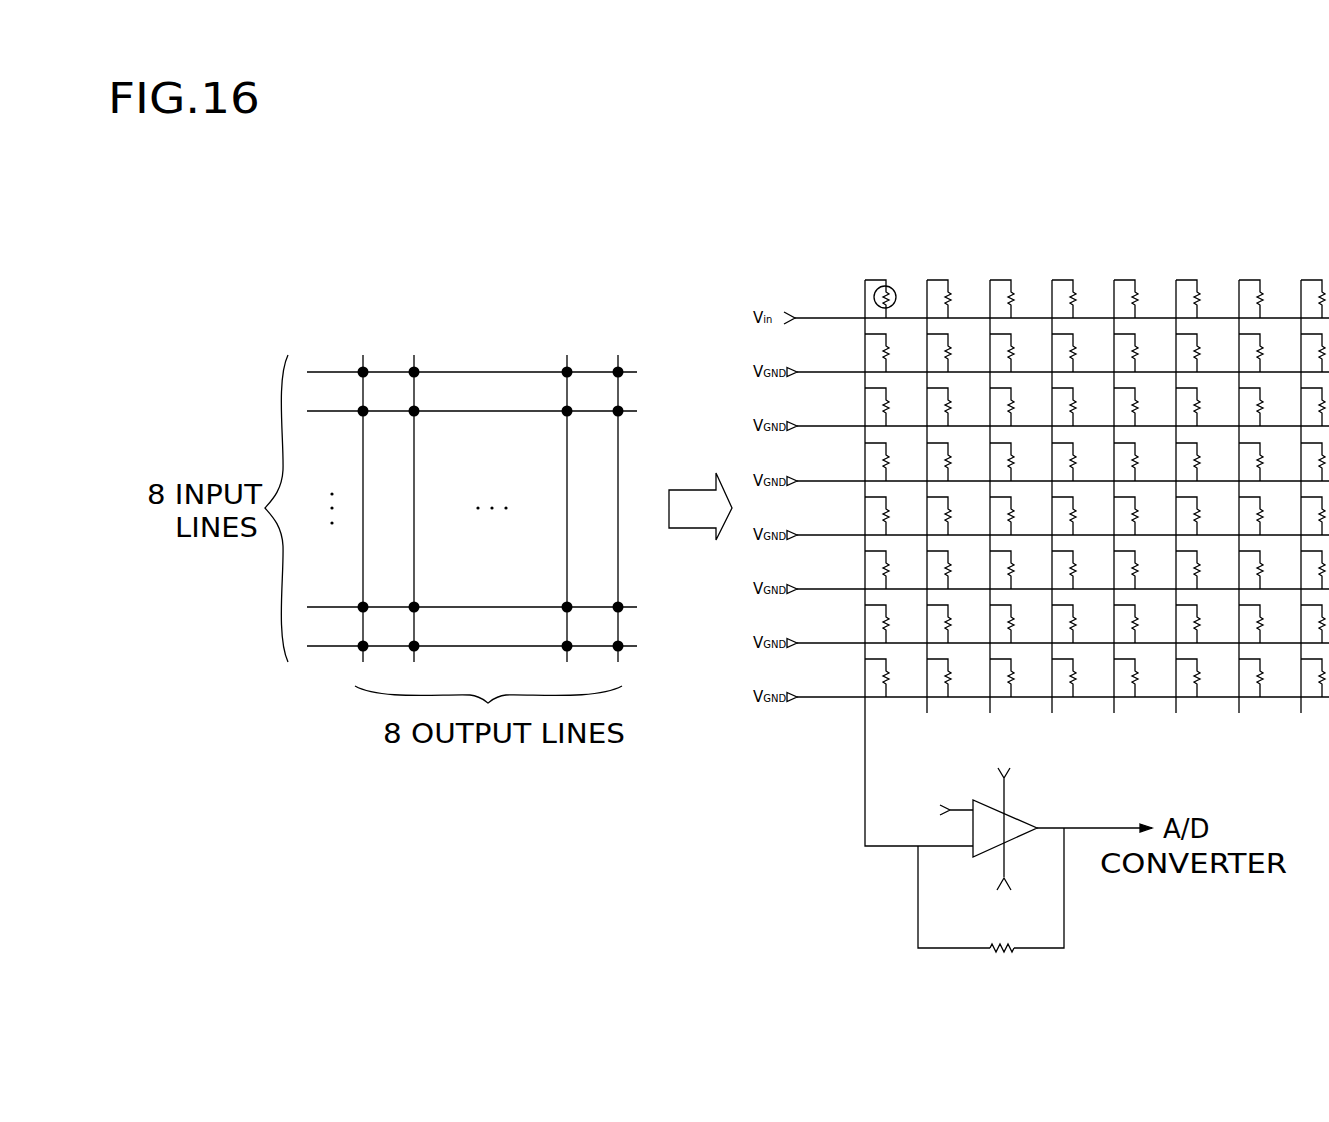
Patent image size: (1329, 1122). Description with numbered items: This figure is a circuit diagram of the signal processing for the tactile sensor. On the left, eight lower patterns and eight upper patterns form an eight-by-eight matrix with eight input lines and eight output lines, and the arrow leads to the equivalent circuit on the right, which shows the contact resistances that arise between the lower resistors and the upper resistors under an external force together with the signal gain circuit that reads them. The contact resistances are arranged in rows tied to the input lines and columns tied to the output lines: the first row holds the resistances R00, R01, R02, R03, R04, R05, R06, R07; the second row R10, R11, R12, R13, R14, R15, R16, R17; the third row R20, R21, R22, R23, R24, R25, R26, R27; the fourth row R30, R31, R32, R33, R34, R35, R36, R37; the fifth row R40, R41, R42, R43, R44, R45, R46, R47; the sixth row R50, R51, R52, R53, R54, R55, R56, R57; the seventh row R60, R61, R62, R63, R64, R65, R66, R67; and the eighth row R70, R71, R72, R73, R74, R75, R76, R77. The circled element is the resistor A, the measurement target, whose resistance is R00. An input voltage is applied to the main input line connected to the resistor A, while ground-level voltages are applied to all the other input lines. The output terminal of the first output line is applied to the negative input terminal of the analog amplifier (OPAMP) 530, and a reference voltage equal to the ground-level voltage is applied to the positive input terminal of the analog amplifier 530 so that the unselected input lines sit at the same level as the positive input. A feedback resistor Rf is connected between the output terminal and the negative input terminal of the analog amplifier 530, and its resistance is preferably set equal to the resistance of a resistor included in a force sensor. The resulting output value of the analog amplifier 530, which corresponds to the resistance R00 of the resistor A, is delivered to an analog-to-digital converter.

The analog amplifier 530 is at (1011, 831).
The resistor A is at (893, 288).
The feedback resistor Rf is at (1002, 960).
The resistance of resistor A R00 is at (860, 299).
The resistor R01 is at (922, 299).
The resistor R02 is at (985, 299).
The resistor R03 is at (1047, 299).
The resistor R04 is at (1109, 299).
The resistor R05 is at (1171, 299).
The resistor R06 is at (1234, 299).
The resistor R07 is at (1296, 299).
The resistor R10 is at (860, 353).
The resistor R11 is at (922, 353).
The resistor R12 is at (985, 353).
The resistor R13 is at (1047, 353).
The resistor R14 is at (1109, 353).
The resistor R15 is at (1171, 353).
The resistor R16 is at (1234, 353).
The resistor R17 is at (1296, 353).
The resistor R20 is at (860, 407).
The resistor R21 is at (922, 407).
The resistor R22 is at (985, 407).
The resistor R23 is at (1047, 407).
The resistor R24 is at (1109, 407).
The resistor R25 is at (1171, 407).
The resistor R26 is at (1234, 407).
The resistor R27 is at (1296, 407).
The resistor R30 is at (860, 462).
The resistor R31 is at (922, 462).
The resistor R32 is at (985, 462).
The resistor R33 is at (1047, 462).
The resistor R34 is at (1109, 462).
The resistor R35 is at (1171, 462).
The resistor R36 is at (1234, 462).
The resistor R37 is at (1296, 462).
The resistor R40 is at (860, 516).
The resistor R41 is at (922, 516).
The resistor R42 is at (985, 516).
The resistor R43 is at (1047, 516).
The resistor R44 is at (1109, 516).
The resistor R45 is at (1171, 516).
The resistor R46 is at (1234, 516).
The resistor R47 is at (1296, 516).
The resistor R50 is at (860, 570).
The resistor R51 is at (922, 570).
The resistor R52 is at (985, 570).
The resistor R53 is at (1047, 570).
The resistor R54 is at (1109, 570).
The resistor R55 is at (1171, 570).
The resistor R56 is at (1234, 570).
The resistor R57 is at (1296, 570).
The resistor R60 is at (860, 624).
The resistor R61 is at (922, 624).
The resistor R62 is at (985, 624).
The resistor R63 is at (1047, 624).
The resistor R64 is at (1109, 624).
The resistor R65 is at (1171, 624).
The resistor R66 is at (1234, 624).
The resistor R67 is at (1296, 624).
The resistor R70 is at (860, 678).
The resistor R71 is at (922, 678).
The resistor R72 is at (985, 678).
The resistor R73 is at (1047, 678).
The resistor R74 is at (1109, 678).
The resistor R75 is at (1171, 678).
The resistor R76 is at (1234, 678).
The resistor R77 is at (1296, 678).